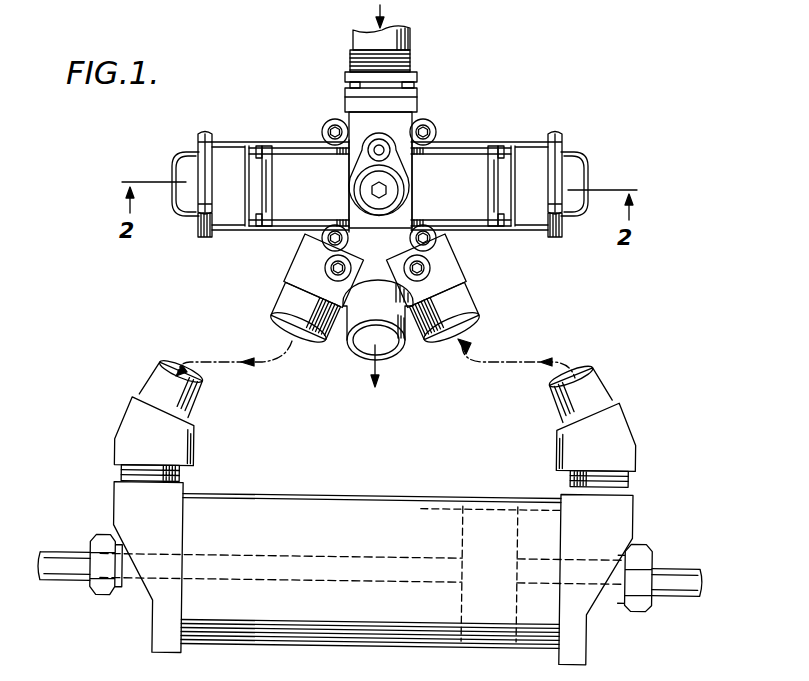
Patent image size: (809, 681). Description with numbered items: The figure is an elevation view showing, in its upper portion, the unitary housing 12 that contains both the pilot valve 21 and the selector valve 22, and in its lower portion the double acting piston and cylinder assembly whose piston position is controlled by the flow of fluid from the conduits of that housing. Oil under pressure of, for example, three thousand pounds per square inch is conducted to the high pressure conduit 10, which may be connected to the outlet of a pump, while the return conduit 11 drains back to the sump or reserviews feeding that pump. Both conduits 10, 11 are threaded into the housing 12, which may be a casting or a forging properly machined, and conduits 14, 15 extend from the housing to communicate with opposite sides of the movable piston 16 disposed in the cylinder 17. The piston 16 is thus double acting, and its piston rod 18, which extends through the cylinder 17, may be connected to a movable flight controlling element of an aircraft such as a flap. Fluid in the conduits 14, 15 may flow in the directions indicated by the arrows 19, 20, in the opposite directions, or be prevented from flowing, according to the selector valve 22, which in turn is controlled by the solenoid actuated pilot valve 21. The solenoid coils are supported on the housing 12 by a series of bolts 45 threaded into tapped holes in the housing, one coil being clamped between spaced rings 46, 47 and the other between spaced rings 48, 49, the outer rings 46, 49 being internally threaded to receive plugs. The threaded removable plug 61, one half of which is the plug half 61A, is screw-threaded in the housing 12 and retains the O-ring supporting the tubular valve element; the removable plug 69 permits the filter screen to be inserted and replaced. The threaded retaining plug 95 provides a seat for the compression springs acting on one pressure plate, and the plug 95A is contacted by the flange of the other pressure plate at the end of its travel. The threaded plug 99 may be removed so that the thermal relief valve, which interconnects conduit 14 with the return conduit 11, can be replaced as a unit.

The high pressure conduit 10 is at (356, 43).
The return conduit 11 is at (392, 357).
The unitary housing 12 is at (512, 133).
The conduit 14 is at (282, 302).
The conduit 15 is at (478, 312).
The movable piston 16 is at (492, 515).
The cylinder 17 is at (378, 505).
The piston rod 18 is at (681, 572).
The arrow 19 is at (258, 362).
The arrow 20 is at (498, 362).
The pilot valve 21 is at (437, 171).
The selector valve 22 is at (525, 161).
The bolts 45 is at (288, 150).
The ring 46 is at (273, 184).
The ring 47 is at (346, 197).
The ring 48 is at (413, 190).
The ring 49 is at (487, 200).
The threaded removable plug 61 is at (363, 185).
The plug half 61A is at (382, 203).
The removable plug 69 is at (386, 144).
The threaded retaining plug 95 is at (178, 168).
The plug 95A is at (581, 169).
The threaded plug 99 is at (325, 270).